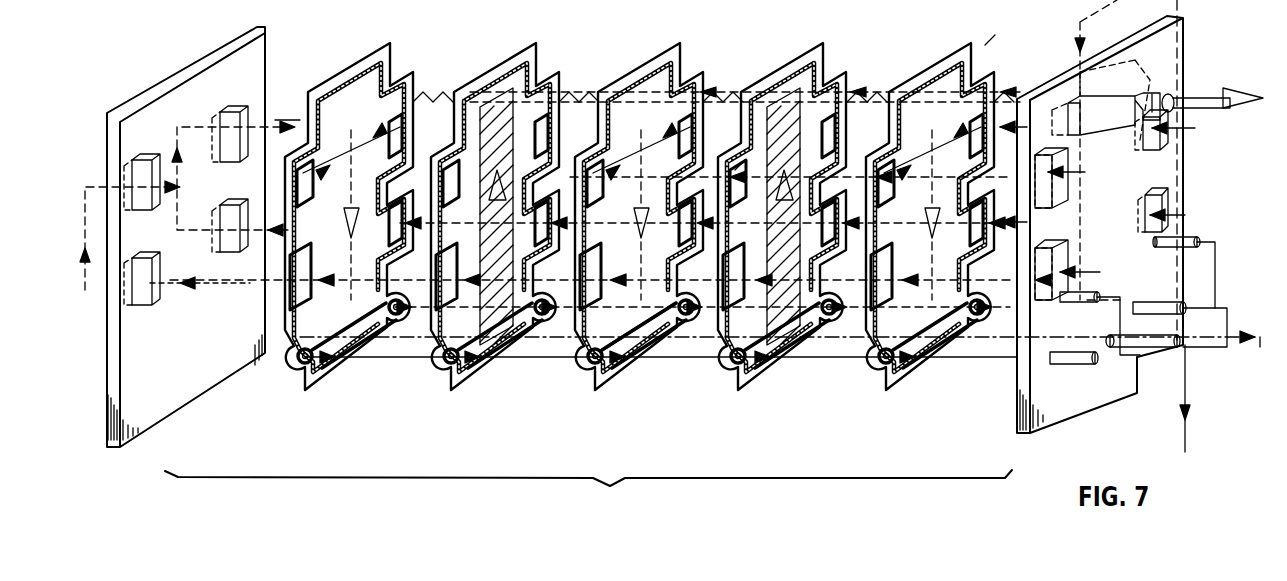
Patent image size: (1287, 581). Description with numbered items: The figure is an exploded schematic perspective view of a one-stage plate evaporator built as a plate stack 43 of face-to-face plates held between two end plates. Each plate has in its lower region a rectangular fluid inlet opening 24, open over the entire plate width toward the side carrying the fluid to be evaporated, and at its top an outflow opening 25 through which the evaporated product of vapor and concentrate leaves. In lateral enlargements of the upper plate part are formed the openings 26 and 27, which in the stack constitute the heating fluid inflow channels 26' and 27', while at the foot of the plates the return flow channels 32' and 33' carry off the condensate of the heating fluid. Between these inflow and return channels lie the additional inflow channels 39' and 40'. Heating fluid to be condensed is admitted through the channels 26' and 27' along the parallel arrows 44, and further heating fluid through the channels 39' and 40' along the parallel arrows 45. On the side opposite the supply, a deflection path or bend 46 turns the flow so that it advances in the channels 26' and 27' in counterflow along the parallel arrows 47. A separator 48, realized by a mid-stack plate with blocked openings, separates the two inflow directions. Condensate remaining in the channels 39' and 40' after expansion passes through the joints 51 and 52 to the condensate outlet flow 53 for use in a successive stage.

The fluid inlet opening 24 is at (1258, 350).
The outflow opening 25 is at (1240, 98).
The heating fluid inflow opening 26 is at (1181, 136).
The heating fluid inflow channel 26' is at (640, 208).
The heating fluid inflow opening 27 is at (648, 153).
The heating fluid inflow channel 27' is at (746, 107).
The return flow channel 32' is at (922, 218).
The return flow channel 33' is at (782, 228).
The additional inflow channel 39' is at (709, 232).
The additional inflow channel 40' is at (653, 293).
The plate stack 43 is at (588, 497).
The parallel arrows 44 is at (705, 178).
The parallel arrows 45 is at (480, 362).
The deflection path 46 is at (178, 160).
The parallel arrows 47 is at (180, 160).
The separator 48 is at (588, 160).
The joint 51 is at (1120, 322).
The joint 52 is at (1215, 242).
The condensate outlet flow 53 is at (1185, 437).